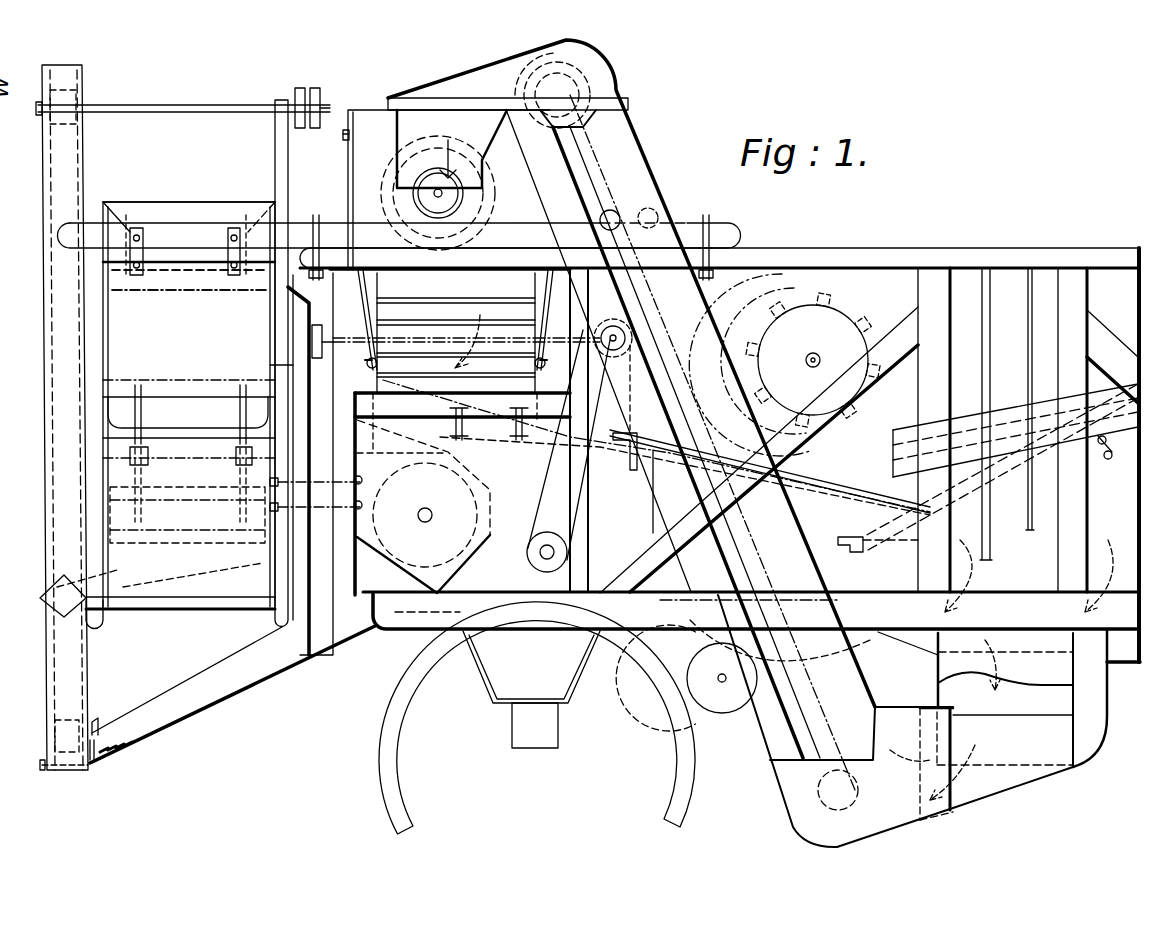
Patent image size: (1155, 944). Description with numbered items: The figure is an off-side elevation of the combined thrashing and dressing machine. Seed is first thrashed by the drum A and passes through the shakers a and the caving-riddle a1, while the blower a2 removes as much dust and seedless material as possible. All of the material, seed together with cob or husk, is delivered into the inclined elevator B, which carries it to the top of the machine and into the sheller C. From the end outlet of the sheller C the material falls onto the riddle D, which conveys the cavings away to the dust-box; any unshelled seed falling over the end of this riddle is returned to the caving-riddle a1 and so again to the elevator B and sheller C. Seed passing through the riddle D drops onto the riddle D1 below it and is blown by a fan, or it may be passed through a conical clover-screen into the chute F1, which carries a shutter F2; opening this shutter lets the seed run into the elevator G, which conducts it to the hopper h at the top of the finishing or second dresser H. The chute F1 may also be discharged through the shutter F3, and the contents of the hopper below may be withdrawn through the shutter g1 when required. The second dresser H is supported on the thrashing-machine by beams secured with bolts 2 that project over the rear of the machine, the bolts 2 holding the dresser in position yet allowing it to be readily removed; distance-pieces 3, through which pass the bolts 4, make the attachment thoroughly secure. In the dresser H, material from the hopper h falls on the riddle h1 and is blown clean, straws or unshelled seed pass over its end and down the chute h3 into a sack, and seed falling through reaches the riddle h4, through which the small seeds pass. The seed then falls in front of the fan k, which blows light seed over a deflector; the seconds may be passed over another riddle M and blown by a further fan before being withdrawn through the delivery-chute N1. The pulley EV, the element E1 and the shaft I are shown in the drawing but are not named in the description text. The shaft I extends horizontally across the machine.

The drum A is at (784, 365).
The elevator B is at (730, 443).
The sheller C is at (485, 161).
The riddle D is at (462, 331).
The riddle D1 is at (456, 346).
The pulley EV is at (423, 506).
The belt E1 is at (545, 440).
The chute F1 is at (205, 658).
The shutter F2 is at (98, 722).
The shutter F3 is at (166, 752).
The elevator G is at (70, 653).
The finishing or second dresser H is at (180, 415).
The shaft rod I is at (305, 232).
The riddle M is at (161, 537).
The delivery-chute N1 is at (62, 592).
The shakers a is at (902, 436).
The caving-riddle a1 is at (852, 552).
The blower a2 is at (686, 678).
The shutter g1 is at (78, 762).
The hopper h is at (132, 215).
The riddle h1 is at (190, 282).
The chute h3 is at (292, 360).
The riddle h4 is at (180, 302).
The fan k is at (189, 453).
The bolts 2 is at (118, 238).
The distance-pieces 3 is at (315, 488).
The bolts 4 is at (362, 482).